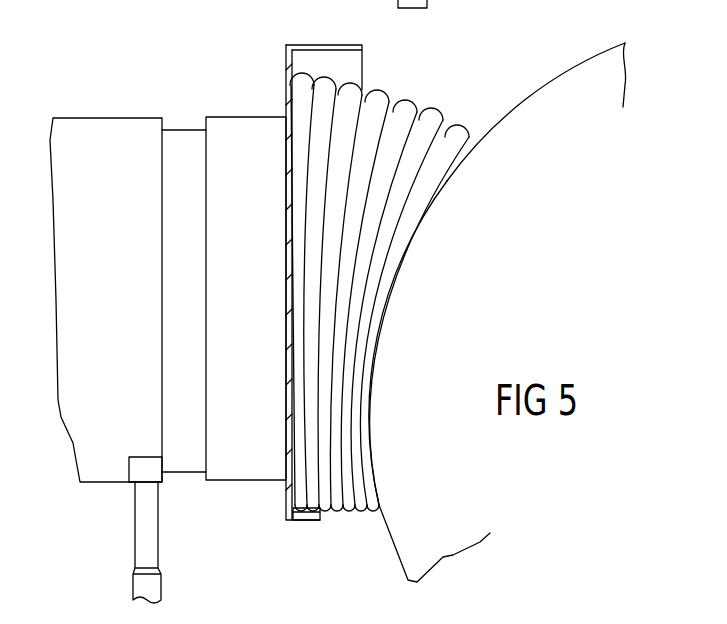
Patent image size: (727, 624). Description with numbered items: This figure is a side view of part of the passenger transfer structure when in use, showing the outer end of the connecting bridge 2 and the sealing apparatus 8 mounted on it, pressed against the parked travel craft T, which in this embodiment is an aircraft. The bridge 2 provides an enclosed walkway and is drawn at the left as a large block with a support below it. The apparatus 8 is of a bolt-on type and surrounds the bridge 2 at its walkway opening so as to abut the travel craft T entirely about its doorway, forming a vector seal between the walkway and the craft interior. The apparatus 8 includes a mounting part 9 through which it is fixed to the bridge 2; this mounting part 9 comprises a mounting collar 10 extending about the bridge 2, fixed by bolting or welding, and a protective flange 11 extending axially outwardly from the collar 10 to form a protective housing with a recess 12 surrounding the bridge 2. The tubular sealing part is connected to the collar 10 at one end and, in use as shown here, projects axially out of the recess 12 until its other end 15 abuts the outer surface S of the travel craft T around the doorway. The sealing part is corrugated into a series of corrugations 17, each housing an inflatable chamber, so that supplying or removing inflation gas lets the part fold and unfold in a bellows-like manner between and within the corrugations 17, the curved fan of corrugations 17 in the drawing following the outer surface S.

The connecting bridge 2 is at (91, 148).
The apparatus 8 is at (257, 103).
The mounting part 9 is at (280, 77).
The mounting collar 10 is at (285, 308).
The protective flange 11 is at (335, 45).
The recess 12 is at (308, 514).
The end 15 is at (447, 181).
The corrugations 17 is at (380, 95).
The outer surface S is at (513, 130).
The travel craft T is at (549, 119).